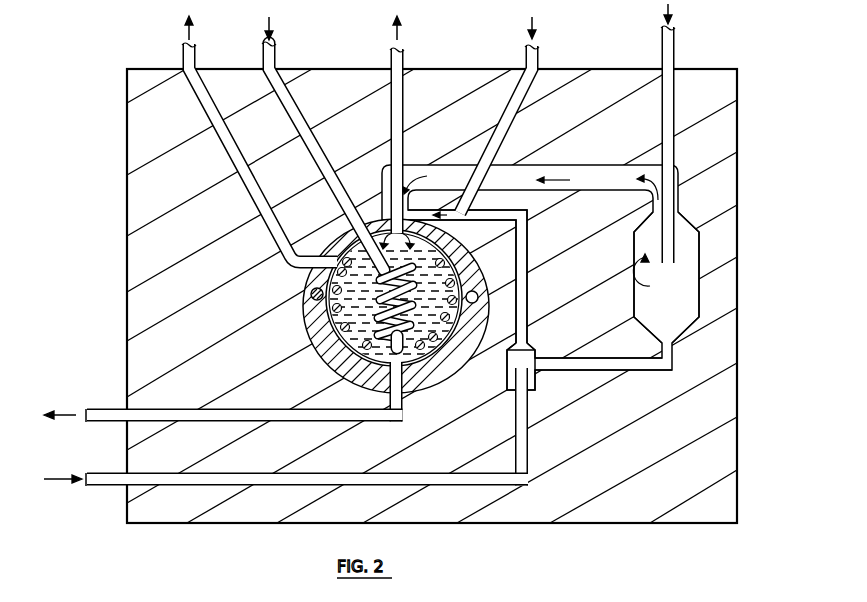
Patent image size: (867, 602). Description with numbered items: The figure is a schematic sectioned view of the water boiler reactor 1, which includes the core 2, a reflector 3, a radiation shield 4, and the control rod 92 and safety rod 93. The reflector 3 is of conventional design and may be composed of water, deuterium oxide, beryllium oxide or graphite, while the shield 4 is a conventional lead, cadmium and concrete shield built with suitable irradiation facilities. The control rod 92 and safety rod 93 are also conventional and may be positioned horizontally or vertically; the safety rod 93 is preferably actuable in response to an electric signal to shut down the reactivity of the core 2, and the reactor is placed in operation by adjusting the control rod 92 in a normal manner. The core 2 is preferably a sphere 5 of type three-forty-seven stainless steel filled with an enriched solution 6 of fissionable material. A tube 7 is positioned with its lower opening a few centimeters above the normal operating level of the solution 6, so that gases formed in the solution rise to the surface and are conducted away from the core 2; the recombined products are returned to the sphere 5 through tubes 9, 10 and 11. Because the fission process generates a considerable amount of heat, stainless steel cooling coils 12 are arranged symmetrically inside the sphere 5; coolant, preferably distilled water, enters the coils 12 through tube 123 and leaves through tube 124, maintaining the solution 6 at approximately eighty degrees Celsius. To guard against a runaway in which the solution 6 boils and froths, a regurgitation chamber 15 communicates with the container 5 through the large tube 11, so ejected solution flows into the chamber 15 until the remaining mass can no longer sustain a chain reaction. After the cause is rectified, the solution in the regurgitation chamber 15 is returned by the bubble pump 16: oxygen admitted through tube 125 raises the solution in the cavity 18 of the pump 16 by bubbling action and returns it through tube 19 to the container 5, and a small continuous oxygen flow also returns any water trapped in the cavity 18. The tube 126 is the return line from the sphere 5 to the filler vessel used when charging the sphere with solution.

The reactor 1 is at (125, 119).
The core 2 is at (296, 305).
The reflector 3 is at (307, 277).
The radiation shield 4 is at (137, 273).
The sphere 5 is at (327, 318).
The enriched solution 6 is at (333, 360).
The tube 7 is at (392, 62).
The tube 9 is at (527, 50).
The tube 10 is at (664, 53).
The large tube 11 is at (573, 173).
The cooling coils 12 is at (425, 338).
The regurgitation chamber 15 is at (687, 287).
The bubble pump 16 is at (539, 395).
The cavity 18 is at (530, 360).
The tube 19 is at (526, 303).
The control rod 92 is at (311, 291).
The safety rod 93 is at (477, 302).
The tube 123 is at (275, 62).
The tube 124 is at (184, 59).
The tube 125 is at (140, 477).
The return line 126 is at (137, 417).